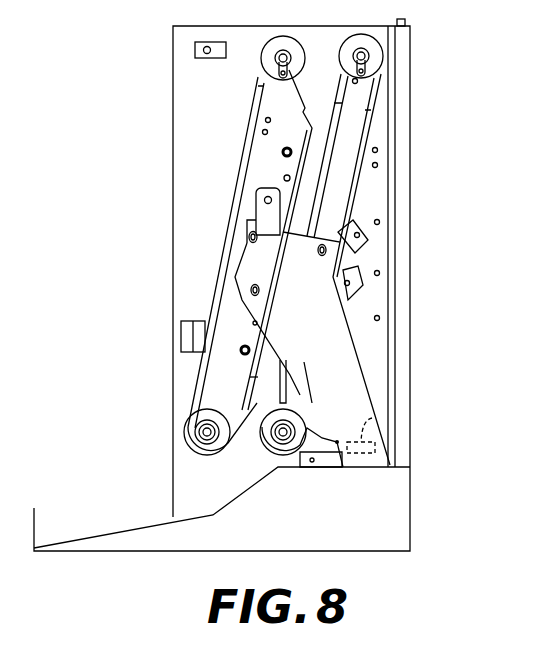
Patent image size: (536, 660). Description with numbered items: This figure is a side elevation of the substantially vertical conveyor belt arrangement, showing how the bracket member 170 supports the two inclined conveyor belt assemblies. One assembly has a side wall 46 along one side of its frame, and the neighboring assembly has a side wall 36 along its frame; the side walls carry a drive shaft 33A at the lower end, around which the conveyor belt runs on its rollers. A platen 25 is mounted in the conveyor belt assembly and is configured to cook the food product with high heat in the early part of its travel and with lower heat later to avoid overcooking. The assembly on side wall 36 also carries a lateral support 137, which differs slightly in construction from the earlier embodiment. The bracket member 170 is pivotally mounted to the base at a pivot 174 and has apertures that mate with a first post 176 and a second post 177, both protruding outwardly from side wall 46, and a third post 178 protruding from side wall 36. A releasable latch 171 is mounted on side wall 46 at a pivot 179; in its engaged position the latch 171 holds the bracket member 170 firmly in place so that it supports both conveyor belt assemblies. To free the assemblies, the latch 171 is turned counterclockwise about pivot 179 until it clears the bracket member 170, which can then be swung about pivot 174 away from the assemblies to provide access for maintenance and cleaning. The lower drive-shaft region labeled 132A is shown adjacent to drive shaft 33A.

The side wall 46 is at (262, 147).
The platen 25 is at (330, 119).
The side wall 36 is at (343, 153).
The pivot 179 is at (268, 197).
The latch 171 is at (257, 215).
The first post 176 is at (249, 238).
The second post 177 is at (251, 290).
The lateral support 137 is at (343, 243).
The third post 178 is at (326, 251).
The bracket member 170 is at (343, 367).
The pivot 174 is at (372, 417).
The drive shaft 33A is at (287, 440).
The pulley housing 132A is at (273, 450).